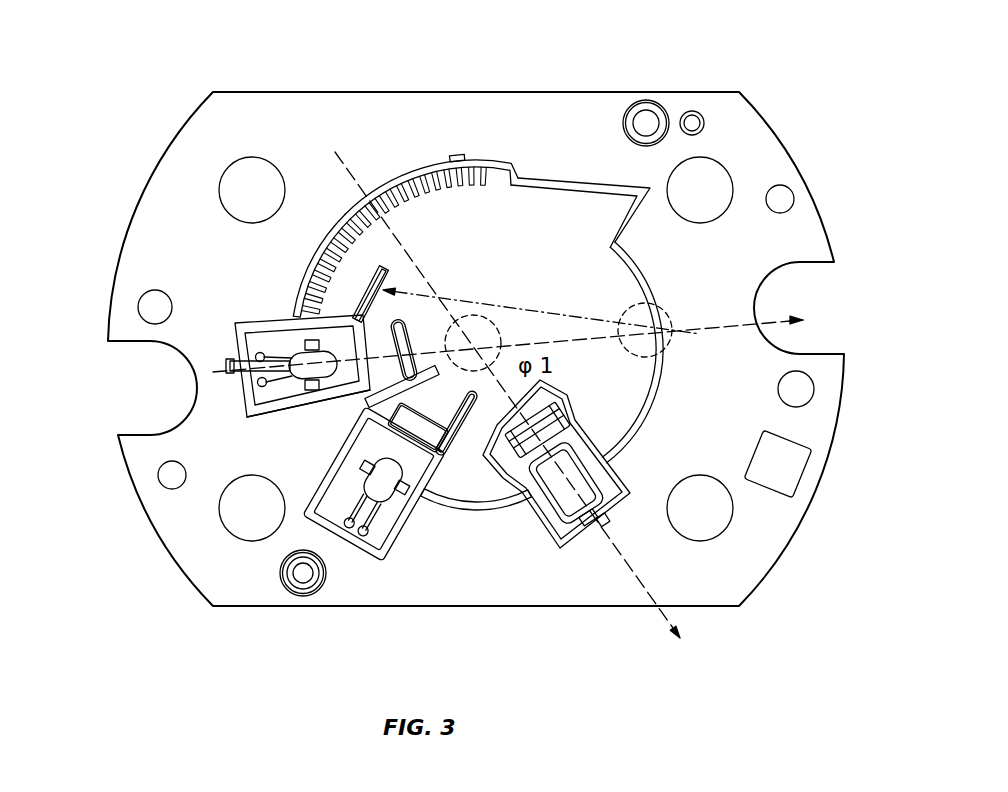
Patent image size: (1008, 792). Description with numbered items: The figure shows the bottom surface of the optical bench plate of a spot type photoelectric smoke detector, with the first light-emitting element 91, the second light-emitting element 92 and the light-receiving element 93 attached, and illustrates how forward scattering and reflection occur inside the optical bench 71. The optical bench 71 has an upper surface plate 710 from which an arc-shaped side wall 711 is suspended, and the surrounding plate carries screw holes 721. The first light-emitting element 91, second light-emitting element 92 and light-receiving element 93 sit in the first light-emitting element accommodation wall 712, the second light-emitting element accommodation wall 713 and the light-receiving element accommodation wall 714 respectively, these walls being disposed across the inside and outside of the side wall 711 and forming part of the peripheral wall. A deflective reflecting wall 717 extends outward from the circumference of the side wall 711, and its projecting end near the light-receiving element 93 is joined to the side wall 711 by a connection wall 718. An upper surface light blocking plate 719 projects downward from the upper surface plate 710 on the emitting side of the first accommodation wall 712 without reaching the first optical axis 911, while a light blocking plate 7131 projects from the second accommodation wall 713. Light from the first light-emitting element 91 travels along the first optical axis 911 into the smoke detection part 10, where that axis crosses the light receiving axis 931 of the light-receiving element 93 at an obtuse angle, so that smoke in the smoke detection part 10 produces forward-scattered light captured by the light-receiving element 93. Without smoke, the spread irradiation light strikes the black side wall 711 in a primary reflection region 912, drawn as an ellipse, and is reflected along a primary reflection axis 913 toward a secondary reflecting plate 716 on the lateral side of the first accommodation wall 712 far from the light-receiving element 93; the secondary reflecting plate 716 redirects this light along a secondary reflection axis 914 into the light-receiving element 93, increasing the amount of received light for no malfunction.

The smoke detection part 10 is at (470, 330).
The optical bench 71 is at (560, 345).
The first light-emitting element 91 is at (307, 358).
The second light-emitting element 92 is at (388, 500).
The light-receiving element 93 is at (540, 520).
The upper surface plate 710 is at (420, 230).
The side wall 711 is at (393, 170).
The first light-emitting element accommodation wall 712 is at (320, 280).
The second light-emitting element accommodation wall 713 is at (458, 512).
The light-receiving element accommodation wall 714 is at (645, 427).
The secondary reflecting plate 716 is at (360, 290).
The deflective reflecting wall 717 is at (557, 182).
The connection wall 718 is at (640, 232).
The upper surface light blocking plate 719 is at (343, 412).
The screw holes 721 is at (227, 180).
The first optical axis 911 is at (823, 322).
The primary reflection region 912 is at (667, 330).
The primary reflection axis 913 is at (520, 330).
The secondary reflection axis 914 is at (420, 303).
The light receiving axis 931 is at (527, 411).
The light blocking plate 7131 is at (373, 395).